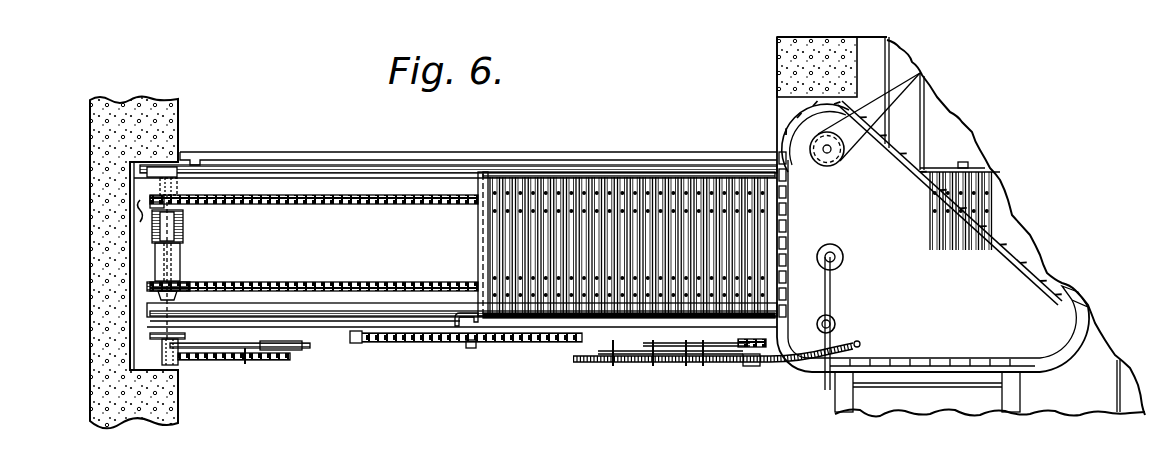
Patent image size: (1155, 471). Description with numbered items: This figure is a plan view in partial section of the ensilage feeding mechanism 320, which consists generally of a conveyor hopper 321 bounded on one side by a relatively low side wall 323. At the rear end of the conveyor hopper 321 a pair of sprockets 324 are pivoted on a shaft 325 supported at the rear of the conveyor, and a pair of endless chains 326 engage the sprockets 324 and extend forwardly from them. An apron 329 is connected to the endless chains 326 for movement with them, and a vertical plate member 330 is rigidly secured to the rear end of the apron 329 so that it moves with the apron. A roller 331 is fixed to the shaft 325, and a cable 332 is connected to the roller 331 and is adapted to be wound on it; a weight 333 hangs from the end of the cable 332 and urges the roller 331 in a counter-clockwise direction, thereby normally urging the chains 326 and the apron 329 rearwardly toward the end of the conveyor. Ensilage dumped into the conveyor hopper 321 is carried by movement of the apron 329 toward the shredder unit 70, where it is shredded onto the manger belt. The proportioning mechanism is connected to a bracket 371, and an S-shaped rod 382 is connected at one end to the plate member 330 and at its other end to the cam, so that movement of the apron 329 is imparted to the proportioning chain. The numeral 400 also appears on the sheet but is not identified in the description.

The shredder unit 70 is at (884, 347).
The ensilage feeding mechanism 320 is at (525, 322).
The conveyor hopper 321 is at (435, 170).
The relatively low side wall 323 is at (360, 167).
The sprockets 324 is at (172, 198).
The shaft 325 is at (180, 252).
The endless chains 326 is at (293, 195).
The apron 329 is at (581, 176).
The vertical plate member 330 is at (487, 173).
The roller 331 is at (155, 260).
The cable 332 is at (153, 230).
The weight 333 is at (138, 219).
The bracket 371 is at (595, 364).
The S-shaped rod 382 is at (459, 324).
The machine 400 is at (273, 463).